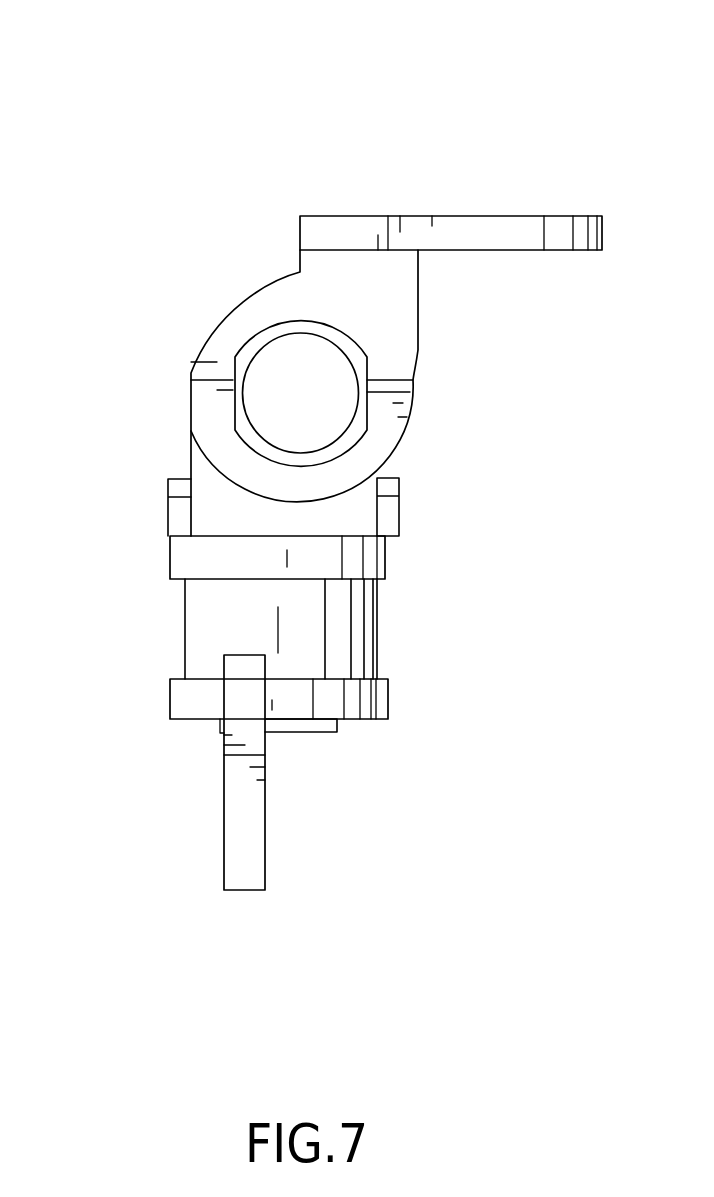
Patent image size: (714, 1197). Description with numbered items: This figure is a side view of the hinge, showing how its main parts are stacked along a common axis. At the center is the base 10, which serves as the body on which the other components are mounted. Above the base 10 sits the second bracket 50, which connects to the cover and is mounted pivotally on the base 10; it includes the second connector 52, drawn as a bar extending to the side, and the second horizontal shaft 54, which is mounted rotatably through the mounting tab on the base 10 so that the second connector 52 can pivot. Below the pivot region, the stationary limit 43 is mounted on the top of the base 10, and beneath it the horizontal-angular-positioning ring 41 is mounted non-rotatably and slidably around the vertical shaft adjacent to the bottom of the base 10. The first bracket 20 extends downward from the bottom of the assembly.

The second bracket 50 is at (450, 146).
The second connector 52 is at (535, 222).
The second horizontal shaft 54 is at (355, 357).
The stationary limit 43 is at (392, 485).
The horizontal-angular-positioning ring 41 is at (383, 570).
The base 10 is at (178, 521).
The first bracket 20 is at (242, 880).